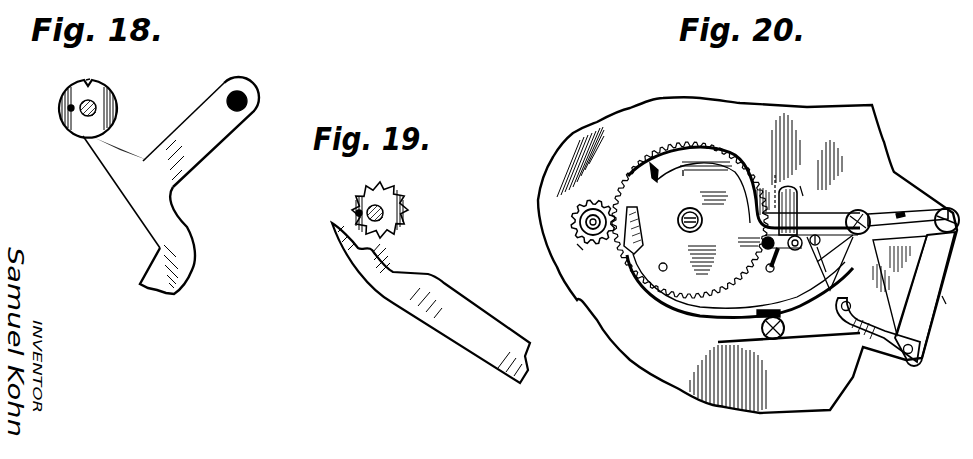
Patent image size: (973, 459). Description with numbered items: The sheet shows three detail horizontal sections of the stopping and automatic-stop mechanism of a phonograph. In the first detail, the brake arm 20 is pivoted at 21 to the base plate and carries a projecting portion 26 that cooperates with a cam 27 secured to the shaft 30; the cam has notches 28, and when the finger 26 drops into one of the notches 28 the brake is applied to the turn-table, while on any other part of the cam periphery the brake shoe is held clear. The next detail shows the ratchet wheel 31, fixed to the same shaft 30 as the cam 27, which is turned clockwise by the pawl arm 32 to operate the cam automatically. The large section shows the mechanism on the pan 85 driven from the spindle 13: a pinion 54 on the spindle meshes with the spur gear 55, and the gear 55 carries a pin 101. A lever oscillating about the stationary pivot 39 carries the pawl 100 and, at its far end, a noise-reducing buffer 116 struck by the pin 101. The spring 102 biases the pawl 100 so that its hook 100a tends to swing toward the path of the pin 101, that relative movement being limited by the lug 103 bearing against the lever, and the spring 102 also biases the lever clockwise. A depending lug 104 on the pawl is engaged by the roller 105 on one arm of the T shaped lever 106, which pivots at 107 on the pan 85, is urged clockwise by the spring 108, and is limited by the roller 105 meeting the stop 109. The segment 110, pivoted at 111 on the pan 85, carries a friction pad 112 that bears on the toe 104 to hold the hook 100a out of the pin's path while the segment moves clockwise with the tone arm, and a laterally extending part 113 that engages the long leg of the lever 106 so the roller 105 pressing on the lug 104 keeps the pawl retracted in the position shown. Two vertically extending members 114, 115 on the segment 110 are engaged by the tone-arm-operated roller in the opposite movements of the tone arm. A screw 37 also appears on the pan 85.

In FIG. 20, the spindle 13 is at (584, 246).
In FIG. 18, the brake arm 20 is at (188, 259).
In FIG. 18, the pivot 21 is at (249, 92).
In FIG. 18, the projecting portion 26 is at (108, 153).
In FIG. 18, the cam 27 is at (118, 110).
In FIG. 18, the notches 28 is at (80, 135).
In FIG. 18, the shaft 30 is at (96, 104).
In FIG. 19, the shaft 30 is at (372, 209).
In FIG. 19, the ratchet wheel 31 is at (356, 207).
In FIG. 19, the pawl arm 32 is at (393, 297).
In FIG. 20, the bar 37 is at (828, 324).
In FIG. 20, the stationary pivot 39 is at (773, 339).
In FIG. 20, the pinion 54 is at (606, 203).
In FIG. 20, the spur gear 55 is at (652, 166).
In FIG. 20, the pan 85 is at (870, 147).
In FIG. 20, the pawl 100 is at (726, 156).
In FIG. 20, the hook or toe of pawl 100a is at (681, 181).
In FIG. 20, the pin 101 is at (664, 264).
In FIG. 20, the spring 102 is at (900, 285).
In FIG. 20, the lug 103 is at (835, 262).
In FIG. 20, the depending lug 104 is at (769, 191).
In FIG. 20, the roller 105 is at (805, 269).
In FIG. 20, the T shaped lever 106 is at (807, 183).
In FIG. 20, the pivot 107 is at (762, 243).
In FIG. 20, the spring 108 is at (766, 249).
In FIG. 20, the stop 109 is at (762, 270).
In FIG. 20, the segment 110 is at (920, 332).
In FIG. 20, the pivot 111 is at (950, 212).
In FIG. 20, the friction pad 112 is at (883, 345).
In FIG. 20, the laterally extending part 113 is at (798, 200).
In FIG. 20, the vertically extending member 114 is at (902, 214).
In FIG. 20, the vertically extending member 115 is at (940, 300).
In FIG. 20, the buffer 116 is at (640, 220).